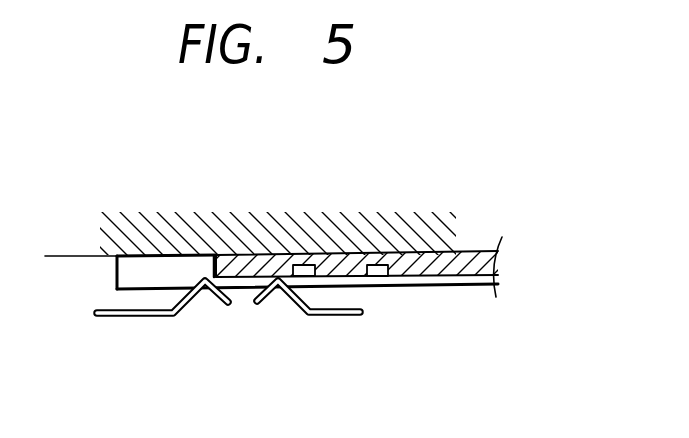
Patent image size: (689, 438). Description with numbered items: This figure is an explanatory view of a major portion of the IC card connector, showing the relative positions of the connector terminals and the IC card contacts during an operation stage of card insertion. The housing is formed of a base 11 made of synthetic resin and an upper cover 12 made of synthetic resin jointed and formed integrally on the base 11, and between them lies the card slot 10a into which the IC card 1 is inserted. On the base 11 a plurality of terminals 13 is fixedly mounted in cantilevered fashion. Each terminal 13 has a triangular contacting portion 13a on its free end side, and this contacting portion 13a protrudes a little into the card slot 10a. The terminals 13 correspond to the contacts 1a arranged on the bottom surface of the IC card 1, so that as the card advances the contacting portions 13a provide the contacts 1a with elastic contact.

The IC card 1 is at (493, 262).
The contacts 1a is at (380, 273).
The card slot 10a is at (158, 268).
The base 11 is at (108, 268).
The upper cover 12 is at (380, 220).
The terminals 13 is at (145, 320).
The contacting portion 13a is at (201, 277).